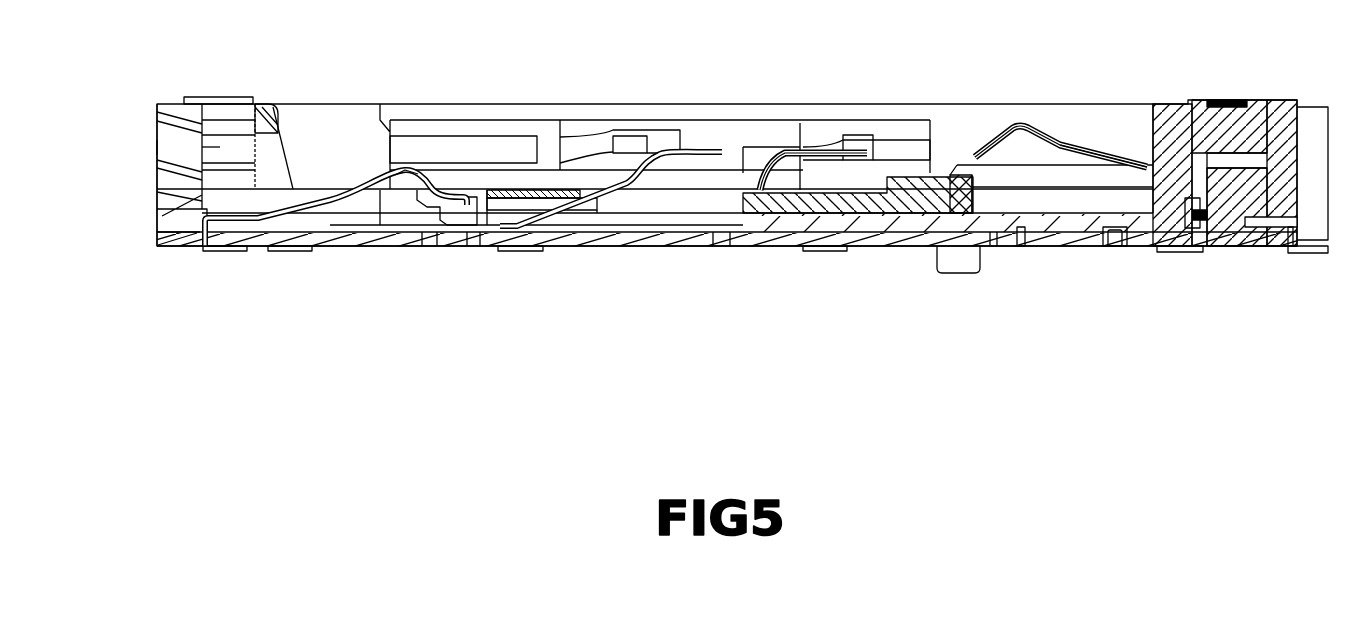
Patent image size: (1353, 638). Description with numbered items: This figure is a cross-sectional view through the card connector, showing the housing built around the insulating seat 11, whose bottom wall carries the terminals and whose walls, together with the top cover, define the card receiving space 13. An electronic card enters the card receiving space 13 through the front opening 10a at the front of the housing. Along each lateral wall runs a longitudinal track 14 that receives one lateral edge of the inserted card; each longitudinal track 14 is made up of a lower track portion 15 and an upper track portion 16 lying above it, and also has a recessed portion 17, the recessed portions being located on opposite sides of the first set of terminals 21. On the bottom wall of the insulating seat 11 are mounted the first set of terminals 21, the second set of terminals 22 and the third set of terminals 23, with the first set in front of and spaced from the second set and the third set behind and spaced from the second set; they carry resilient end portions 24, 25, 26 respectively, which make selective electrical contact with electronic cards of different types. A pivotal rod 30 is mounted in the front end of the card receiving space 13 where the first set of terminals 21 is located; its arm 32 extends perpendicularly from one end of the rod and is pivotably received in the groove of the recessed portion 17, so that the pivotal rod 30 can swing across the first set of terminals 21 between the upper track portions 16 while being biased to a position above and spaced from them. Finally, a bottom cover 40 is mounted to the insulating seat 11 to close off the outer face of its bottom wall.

The insulating seat 11 is at (1222, 125).
The card receiving space 13 is at (152, 147).
The longitudinal track 14 is at (168, 103).
The lower track portion 15 is at (215, 182).
The upper track portion 16 is at (220, 147).
The recessed portion 17 is at (280, 107).
The front opening 10a is at (170, 195).
The first set of terminals 21 is at (333, 190).
The second set of terminals 22 is at (793, 212).
The third set of terminals 23 is at (1083, 140).
The resilient end portion 24 is at (410, 170).
The resilient end portion 25 is at (813, 148).
The resilient end portion 26 is at (1020, 190).
The pivotal rod 30 is at (253, 103).
The arm 32 is at (284, 153).
The bottom cover 40 is at (408, 238).